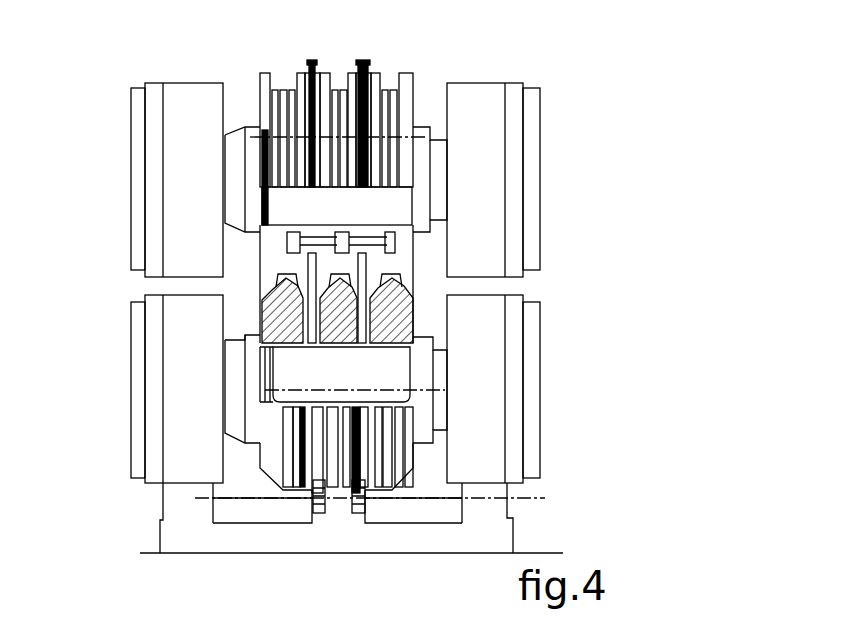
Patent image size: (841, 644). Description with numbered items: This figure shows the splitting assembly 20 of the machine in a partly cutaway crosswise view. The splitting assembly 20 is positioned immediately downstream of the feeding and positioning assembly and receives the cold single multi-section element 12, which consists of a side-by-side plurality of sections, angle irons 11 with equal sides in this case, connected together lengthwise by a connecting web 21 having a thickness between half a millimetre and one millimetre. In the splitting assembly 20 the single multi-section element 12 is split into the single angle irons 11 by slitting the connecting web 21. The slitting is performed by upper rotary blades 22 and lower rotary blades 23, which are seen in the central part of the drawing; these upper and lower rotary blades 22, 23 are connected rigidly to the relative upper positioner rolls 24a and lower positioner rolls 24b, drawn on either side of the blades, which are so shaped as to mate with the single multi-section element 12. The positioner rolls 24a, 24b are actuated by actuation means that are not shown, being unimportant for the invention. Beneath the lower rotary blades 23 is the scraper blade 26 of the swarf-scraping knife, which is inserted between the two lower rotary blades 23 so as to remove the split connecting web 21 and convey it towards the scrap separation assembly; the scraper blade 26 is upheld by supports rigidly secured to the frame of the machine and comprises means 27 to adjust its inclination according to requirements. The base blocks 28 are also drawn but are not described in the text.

The splitting assembly 20 is at (563, 51).
The angle iron 11 is at (413, 288).
The single multi-section element 12 is at (259, 292).
The connecting web 21 is at (413, 318).
The upper rotary blade 22 is at (310, 62).
The lower rotary blade 23 is at (300, 425).
The upper positioner roll 24a is at (262, 80).
The lower positioner roll 24b is at (402, 450).
The scraper blade 26 is at (280, 493).
The inclination adjustment means 27 is at (321, 517).
The base blocks 28 is at (283, 512).